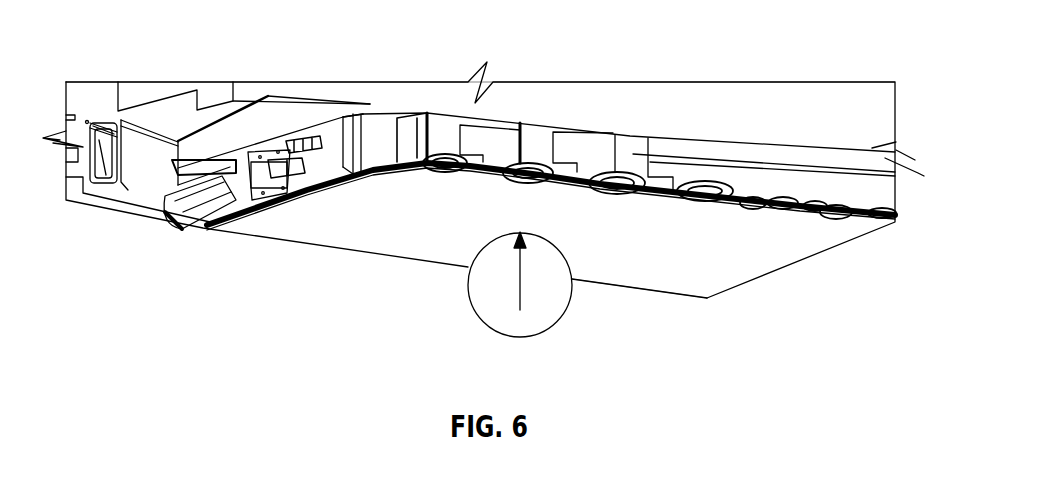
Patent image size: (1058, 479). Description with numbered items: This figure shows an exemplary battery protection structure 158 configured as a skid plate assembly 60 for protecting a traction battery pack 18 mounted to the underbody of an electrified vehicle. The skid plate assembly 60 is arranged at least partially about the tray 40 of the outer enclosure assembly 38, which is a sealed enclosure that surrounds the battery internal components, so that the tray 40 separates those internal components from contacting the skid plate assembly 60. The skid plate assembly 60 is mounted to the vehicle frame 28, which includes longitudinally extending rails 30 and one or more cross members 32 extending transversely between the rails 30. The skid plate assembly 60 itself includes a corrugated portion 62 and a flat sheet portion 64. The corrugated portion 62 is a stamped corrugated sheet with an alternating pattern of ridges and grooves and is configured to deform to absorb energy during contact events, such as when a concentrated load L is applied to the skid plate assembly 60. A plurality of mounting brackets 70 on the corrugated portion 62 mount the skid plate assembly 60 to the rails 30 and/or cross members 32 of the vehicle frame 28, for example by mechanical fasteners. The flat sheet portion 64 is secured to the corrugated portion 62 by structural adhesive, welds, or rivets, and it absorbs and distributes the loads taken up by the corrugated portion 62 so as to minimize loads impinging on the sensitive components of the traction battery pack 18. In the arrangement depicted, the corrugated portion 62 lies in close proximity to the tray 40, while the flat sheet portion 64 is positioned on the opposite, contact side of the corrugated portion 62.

The vehicle frame 28 is at (122, 68).
The rail 30 is at (905, 162).
The cross member 32 is at (200, 138).
The outer enclosure assembly 38 is at (311, 122).
The traction battery pack 18 is at (345, 131).
The tray 40 is at (373, 142).
The corrugated portion 62 is at (502, 162).
The mounting bracket 70 is at (437, 140).
The battery protection structure 158 is at (191, 254).
The skid plate assembly 60 is at (262, 225).
The flat sheet portion 64 is at (661, 282).
The concentrated load L is at (520, 285).